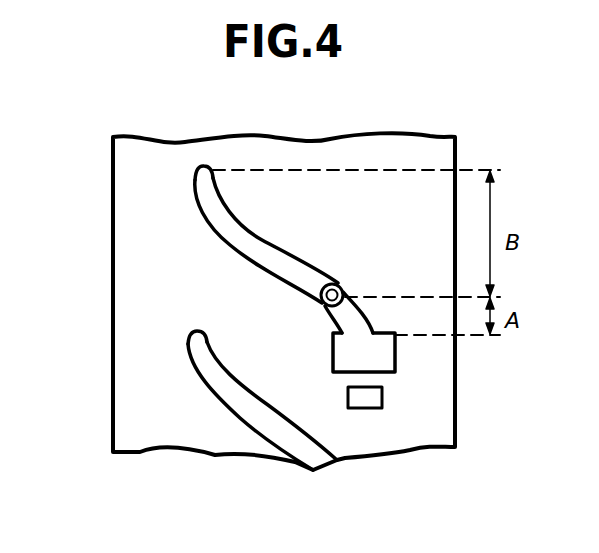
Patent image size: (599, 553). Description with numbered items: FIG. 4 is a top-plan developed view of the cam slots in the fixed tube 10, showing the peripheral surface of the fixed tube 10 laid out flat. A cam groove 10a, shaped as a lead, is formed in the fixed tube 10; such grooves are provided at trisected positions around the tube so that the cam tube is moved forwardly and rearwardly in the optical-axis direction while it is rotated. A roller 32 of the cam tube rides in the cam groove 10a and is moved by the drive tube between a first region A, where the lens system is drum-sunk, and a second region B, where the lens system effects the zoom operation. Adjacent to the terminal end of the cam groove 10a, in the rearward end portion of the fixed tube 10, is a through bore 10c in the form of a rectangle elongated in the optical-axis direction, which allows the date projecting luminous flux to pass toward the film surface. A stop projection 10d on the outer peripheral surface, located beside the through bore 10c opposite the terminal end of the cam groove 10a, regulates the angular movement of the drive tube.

The fixed tube 10 is at (120, 222).
The cam groove 10a is at (232, 246).
The through bore 10c is at (387, 350).
The stop projection 10d is at (360, 400).
The roller 32 is at (325, 284).